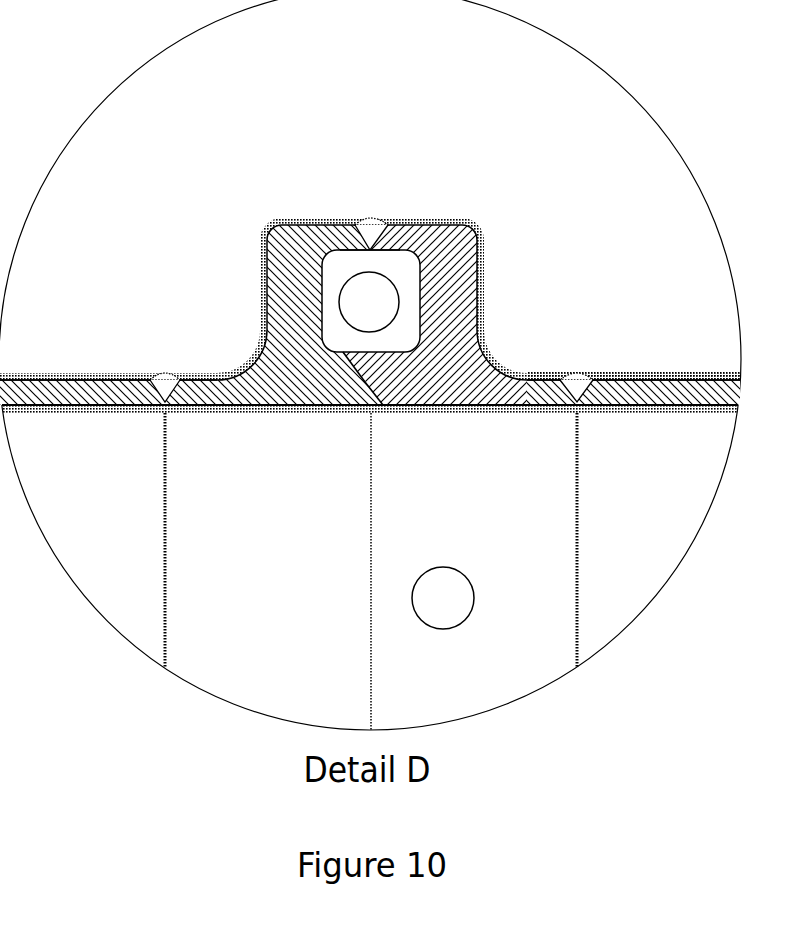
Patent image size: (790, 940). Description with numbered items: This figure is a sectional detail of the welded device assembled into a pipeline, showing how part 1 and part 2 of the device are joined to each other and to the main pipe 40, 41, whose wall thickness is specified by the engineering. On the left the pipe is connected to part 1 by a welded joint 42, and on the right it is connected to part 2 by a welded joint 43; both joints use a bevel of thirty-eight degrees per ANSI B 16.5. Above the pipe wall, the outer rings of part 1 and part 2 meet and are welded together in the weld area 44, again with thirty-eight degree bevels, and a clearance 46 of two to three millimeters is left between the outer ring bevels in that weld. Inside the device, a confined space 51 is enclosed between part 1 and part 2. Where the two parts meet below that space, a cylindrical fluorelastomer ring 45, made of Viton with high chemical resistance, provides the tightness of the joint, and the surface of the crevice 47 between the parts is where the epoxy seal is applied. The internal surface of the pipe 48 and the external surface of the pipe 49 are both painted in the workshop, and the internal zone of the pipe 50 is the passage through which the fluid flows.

The part 1 of the device 1 is at (290, 302).
The part 2 of the device 2 is at (452, 300).
The main pipe 40 is at (72, 390).
The main pipe 41 is at (678, 392).
The welded joint 42 is at (162, 373).
The welded joint 43 is at (577, 375).
The outer ring weld area 44 is at (369, 214).
The cylindrical fluorelastomer ring 45 is at (347, 381).
The clearance 46 is at (366, 248).
The crevice surface 47 is at (375, 405).
The internal surface of the pipe 48 is at (247, 416).
The external surface of the pipe 49 is at (623, 377).
The internal zone of the pipe 50 is at (371, 571).
The confined space 51 is at (371, 301).